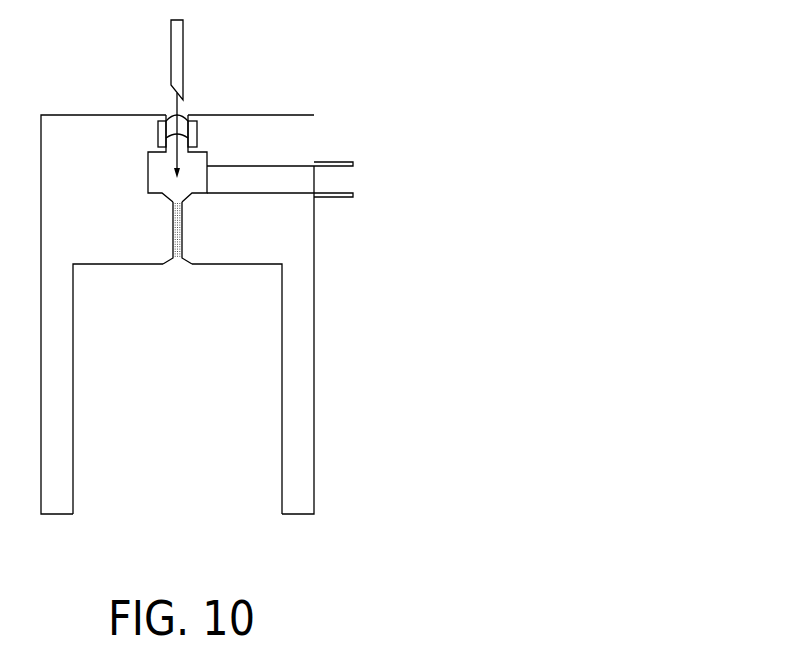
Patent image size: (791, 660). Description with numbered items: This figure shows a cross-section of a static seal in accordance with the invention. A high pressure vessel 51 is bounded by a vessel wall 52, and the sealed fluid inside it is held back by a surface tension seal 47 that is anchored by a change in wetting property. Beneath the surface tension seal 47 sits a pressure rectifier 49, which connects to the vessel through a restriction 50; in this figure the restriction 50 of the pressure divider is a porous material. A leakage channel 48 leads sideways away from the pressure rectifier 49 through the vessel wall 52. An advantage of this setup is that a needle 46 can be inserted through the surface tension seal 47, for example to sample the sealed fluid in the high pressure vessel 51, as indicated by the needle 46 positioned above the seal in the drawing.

The needle 46 is at (187, 57).
The surface tension seal 47 is at (198, 133).
The leakage channel 48 is at (257, 177).
The pressure rectifier 49 is at (191, 182).
The restriction 50 is at (183, 233).
The high pressure vessel 51 is at (220, 383).
The vessel wall 52 is at (295, 467).